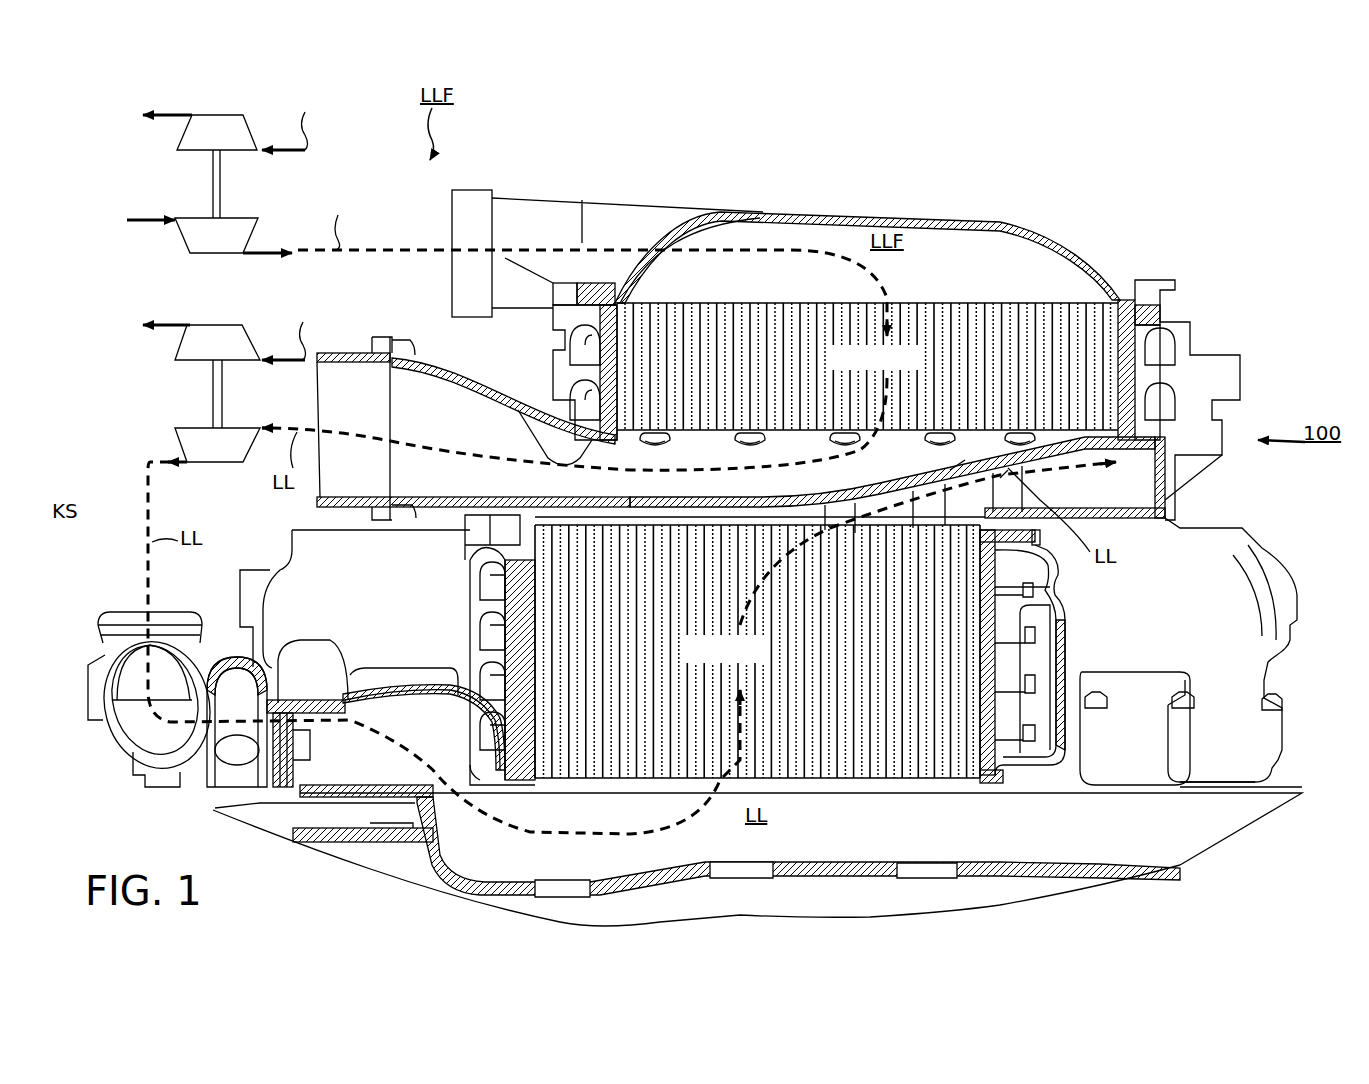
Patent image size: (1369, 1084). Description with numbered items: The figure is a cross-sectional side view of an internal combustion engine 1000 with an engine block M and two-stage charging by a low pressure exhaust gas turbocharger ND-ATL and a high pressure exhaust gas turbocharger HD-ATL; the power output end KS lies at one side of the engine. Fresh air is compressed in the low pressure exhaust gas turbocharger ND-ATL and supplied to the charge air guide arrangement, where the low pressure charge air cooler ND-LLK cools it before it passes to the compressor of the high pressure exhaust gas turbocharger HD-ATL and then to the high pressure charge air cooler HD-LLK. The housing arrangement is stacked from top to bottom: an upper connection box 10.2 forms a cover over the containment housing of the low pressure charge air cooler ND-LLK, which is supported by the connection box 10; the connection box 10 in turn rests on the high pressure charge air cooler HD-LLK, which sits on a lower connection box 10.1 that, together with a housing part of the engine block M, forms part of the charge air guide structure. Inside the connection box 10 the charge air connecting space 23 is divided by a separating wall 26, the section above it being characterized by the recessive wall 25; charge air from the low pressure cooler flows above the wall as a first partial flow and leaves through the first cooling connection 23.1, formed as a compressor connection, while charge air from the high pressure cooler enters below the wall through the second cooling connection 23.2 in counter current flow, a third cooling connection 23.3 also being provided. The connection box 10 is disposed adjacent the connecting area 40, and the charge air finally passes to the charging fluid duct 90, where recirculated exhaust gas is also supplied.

The internal combustion engine 1000 is at (1180, 190).
The connection box 10 is at (1168, 435).
The lower connection box 10.1 is at (325, 775).
The upper connection box 10.2 is at (1050, 240).
The charge air connecting space 23 is at (836, 471).
The first cooling connection 23.1 is at (790, 445).
The second cooling connection 23.2 is at (965, 505).
The third cooling connection 23.3 is at (348, 400).
The recessive wall 25 is at (960, 465).
The separating wall 26 is at (1008, 478).
The connecting area 40 is at (1103, 477).
The charging fluid duct 90 is at (1228, 578).
The low pressure exhaust gas turbocharger ND-ATL is at (222, 110).
The high pressure exhaust gas turbocharger HD-ATL is at (150, 355).
The low pressure charge air cooler ND-LLK is at (867, 366).
The high pressure charge air cooler HD-LLK is at (760, 647).
The power output end KS is at (216, 699).
The engine block M is at (385, 845).